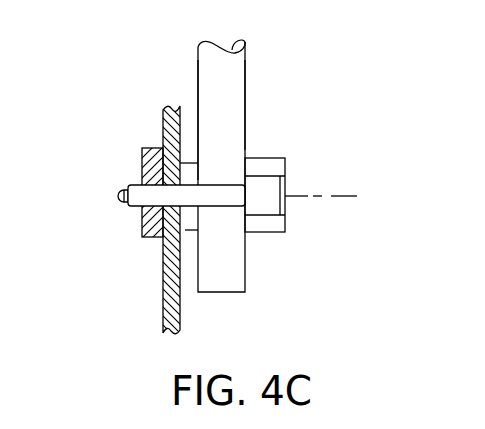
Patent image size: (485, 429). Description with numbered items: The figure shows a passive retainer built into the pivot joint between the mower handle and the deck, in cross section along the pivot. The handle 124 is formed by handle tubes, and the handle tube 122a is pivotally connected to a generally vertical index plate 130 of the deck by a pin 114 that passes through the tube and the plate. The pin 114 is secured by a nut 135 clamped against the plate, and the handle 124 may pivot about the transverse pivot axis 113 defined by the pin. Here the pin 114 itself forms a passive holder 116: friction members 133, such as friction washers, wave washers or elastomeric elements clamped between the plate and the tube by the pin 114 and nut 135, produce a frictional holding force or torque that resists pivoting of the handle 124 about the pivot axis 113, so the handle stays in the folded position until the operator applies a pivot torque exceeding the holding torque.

The pivot axis 113 is at (343, 195).
The pin 114 is at (263, 232).
The passive holder 116 is at (191, 92).
The handle tube 122a is at (232, 123).
The handle 124 is at (253, 78).
The index plate 130 is at (163, 312).
The friction members 133 is at (197, 163).
The nut 135 is at (142, 148).